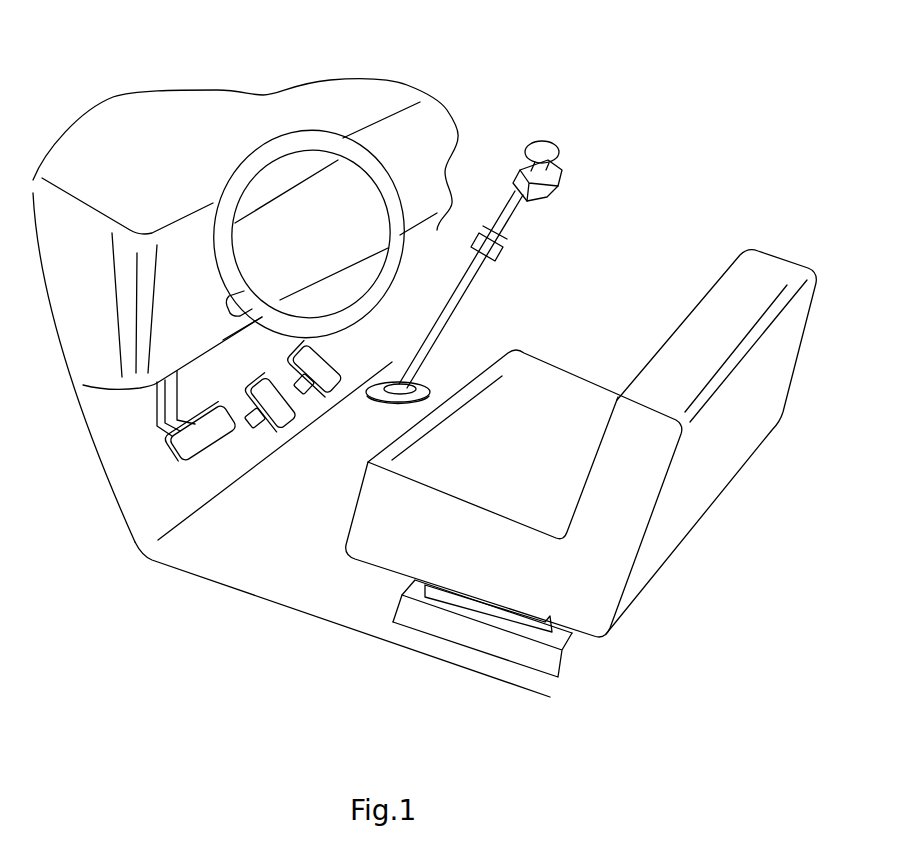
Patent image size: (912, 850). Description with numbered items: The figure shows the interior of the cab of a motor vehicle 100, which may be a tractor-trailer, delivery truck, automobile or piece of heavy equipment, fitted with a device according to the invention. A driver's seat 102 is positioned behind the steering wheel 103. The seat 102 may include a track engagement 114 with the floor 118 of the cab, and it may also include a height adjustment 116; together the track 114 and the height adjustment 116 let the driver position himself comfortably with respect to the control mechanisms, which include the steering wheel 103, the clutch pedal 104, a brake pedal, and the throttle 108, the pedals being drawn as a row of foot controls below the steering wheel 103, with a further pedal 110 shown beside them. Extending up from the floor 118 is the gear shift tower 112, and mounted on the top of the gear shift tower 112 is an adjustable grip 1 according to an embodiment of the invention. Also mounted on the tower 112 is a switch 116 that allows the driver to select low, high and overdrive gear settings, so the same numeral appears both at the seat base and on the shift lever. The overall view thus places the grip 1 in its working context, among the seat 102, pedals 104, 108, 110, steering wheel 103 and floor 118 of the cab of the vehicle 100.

The motor vehicle 100 is at (546, 39).
The adjustable grip 1 is at (562, 166).
The driver's seat 102 is at (712, 310).
The steering wheel 103 is at (261, 150).
The clutch pedal 104 is at (183, 447).
The throttle 108 is at (280, 418).
The pedal 110 is at (327, 380).
The gear shift tower 112 is at (507, 217).
The track engagement 114 is at (538, 657).
The height adjustment 116 is at (492, 255).
The floor 118 is at (268, 535).